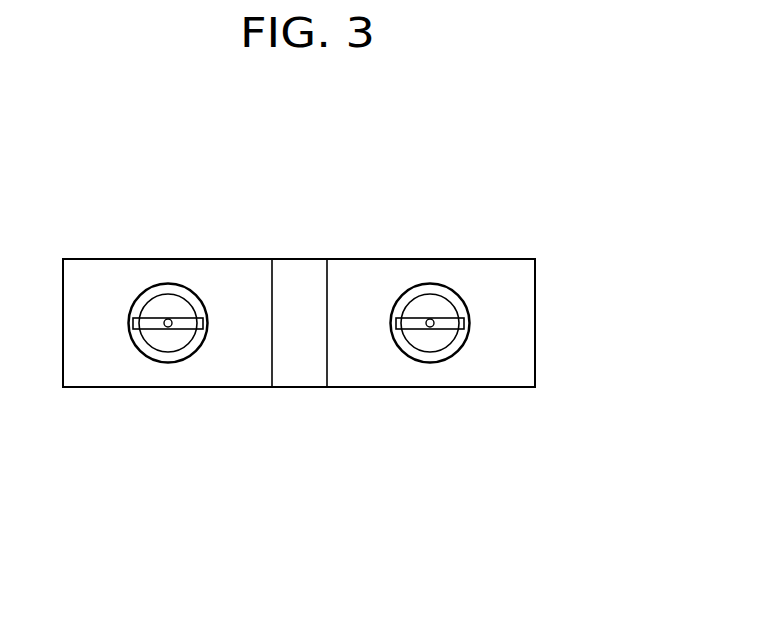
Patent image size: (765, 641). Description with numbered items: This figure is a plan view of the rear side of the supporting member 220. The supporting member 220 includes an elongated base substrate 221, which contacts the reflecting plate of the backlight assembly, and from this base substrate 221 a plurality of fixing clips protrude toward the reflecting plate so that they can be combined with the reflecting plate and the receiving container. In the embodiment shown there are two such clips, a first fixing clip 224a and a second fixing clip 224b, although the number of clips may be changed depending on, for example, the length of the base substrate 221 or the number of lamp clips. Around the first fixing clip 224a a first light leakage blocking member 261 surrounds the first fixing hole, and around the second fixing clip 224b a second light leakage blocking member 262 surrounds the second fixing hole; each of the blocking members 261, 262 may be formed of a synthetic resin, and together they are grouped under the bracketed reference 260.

The supporting member 220 is at (605, 167).
The base substrate 221 is at (523, 326).
The first fixing clip 224a is at (168, 319).
The second fixing clip 224b is at (430, 319).
The lens unit 260 is at (299, 340).
The first light leakage blocking member 261 is at (168, 320).
The second light leakage blocking member 262 is at (430, 320).